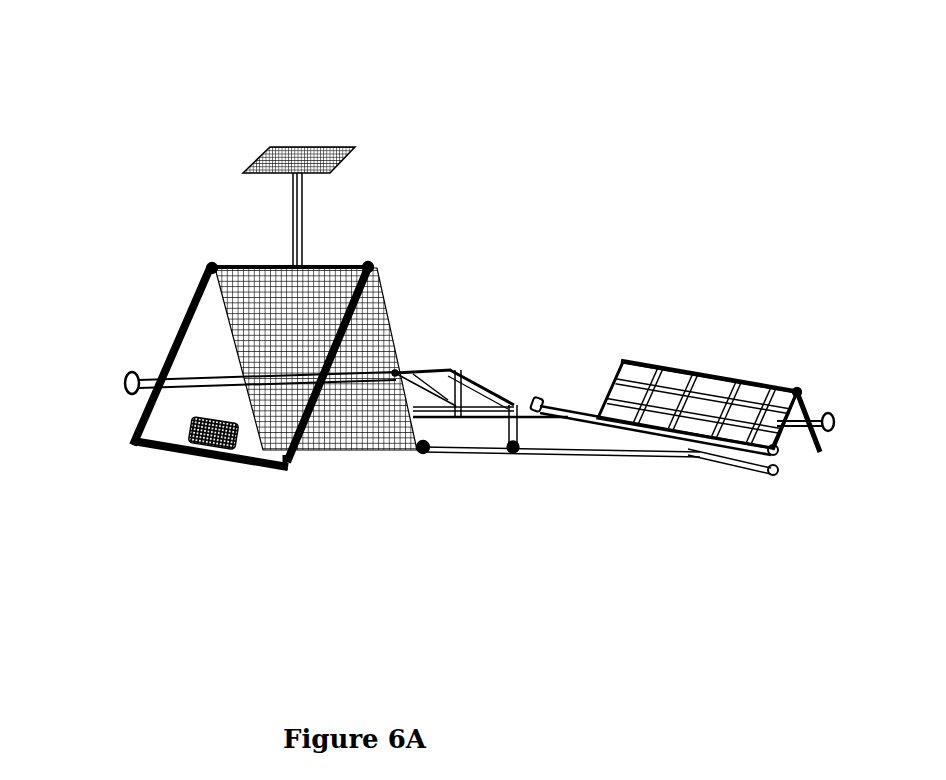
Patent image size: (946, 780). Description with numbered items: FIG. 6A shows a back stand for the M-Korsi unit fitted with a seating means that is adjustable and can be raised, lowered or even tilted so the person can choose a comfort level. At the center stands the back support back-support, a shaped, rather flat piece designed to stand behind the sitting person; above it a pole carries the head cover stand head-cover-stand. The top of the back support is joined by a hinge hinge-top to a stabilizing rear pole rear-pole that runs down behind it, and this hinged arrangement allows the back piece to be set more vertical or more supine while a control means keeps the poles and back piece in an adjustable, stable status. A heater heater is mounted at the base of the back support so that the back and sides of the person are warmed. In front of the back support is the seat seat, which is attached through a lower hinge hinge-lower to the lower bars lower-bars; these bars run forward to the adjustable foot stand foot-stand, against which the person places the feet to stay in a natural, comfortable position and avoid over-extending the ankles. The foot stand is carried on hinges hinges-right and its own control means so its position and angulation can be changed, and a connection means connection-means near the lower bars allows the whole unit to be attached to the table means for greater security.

The head cover stand head-cover-stand is at (306, 142).
The back support back-support is at (379, 299).
The hinge hinge-top is at (363, 262).
The rear pole rear-pole is at (171, 333).
The element heater is at (194, 452).
The element seat is at (483, 374).
The hinge hinge-lower is at (419, 456).
The lower bars lower-bars is at (562, 457).
The connection means to table connection-means is at (741, 470).
The foot stand foot-stand is at (609, 366).
The hinges hinges-right is at (768, 443).